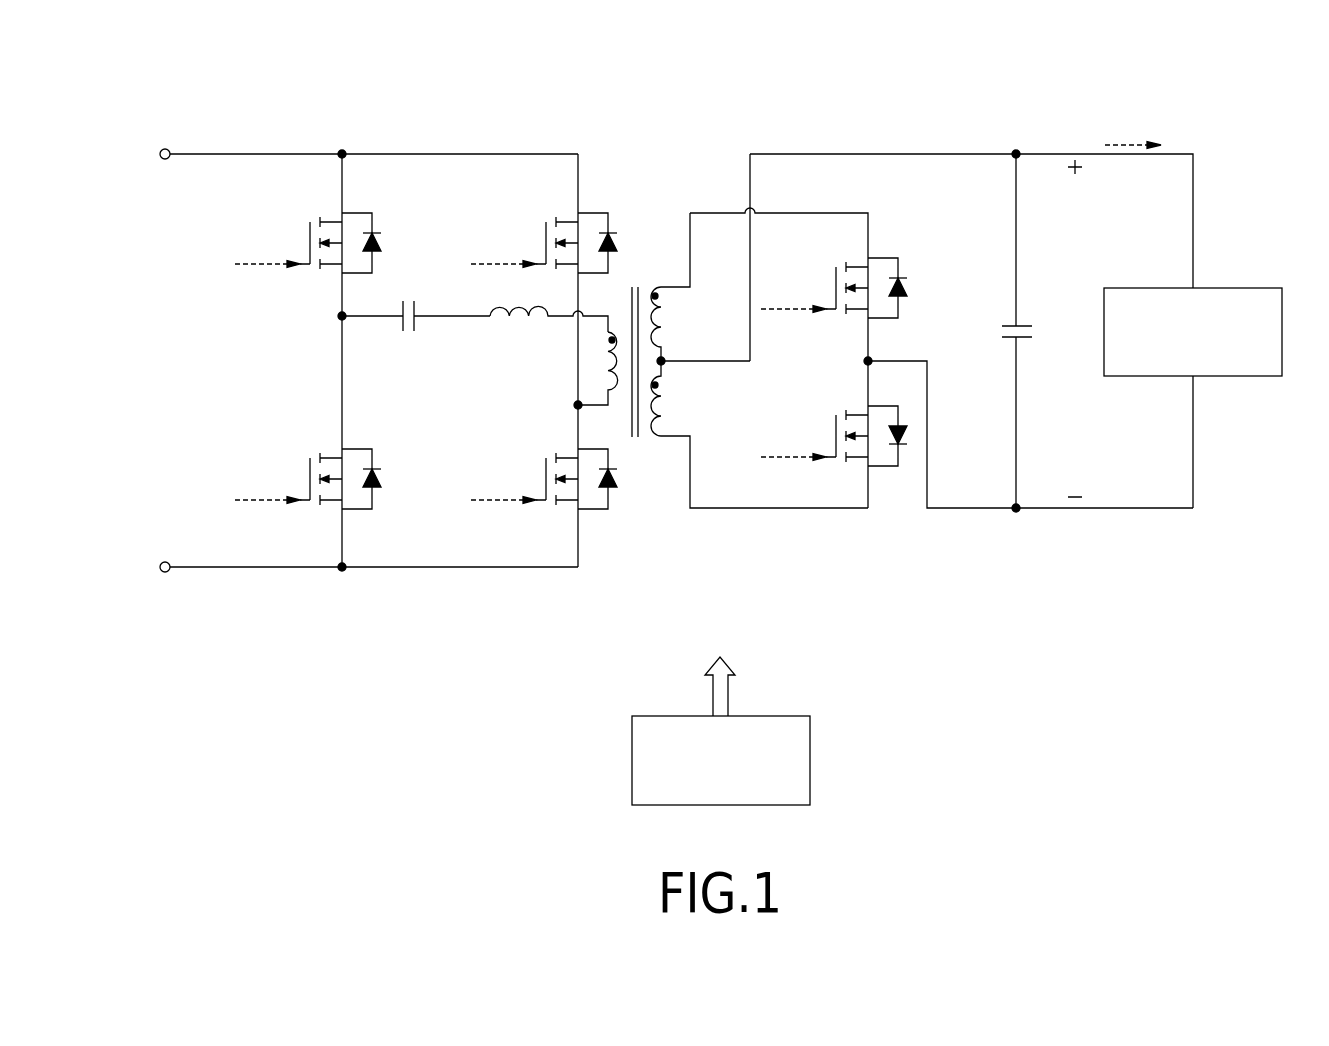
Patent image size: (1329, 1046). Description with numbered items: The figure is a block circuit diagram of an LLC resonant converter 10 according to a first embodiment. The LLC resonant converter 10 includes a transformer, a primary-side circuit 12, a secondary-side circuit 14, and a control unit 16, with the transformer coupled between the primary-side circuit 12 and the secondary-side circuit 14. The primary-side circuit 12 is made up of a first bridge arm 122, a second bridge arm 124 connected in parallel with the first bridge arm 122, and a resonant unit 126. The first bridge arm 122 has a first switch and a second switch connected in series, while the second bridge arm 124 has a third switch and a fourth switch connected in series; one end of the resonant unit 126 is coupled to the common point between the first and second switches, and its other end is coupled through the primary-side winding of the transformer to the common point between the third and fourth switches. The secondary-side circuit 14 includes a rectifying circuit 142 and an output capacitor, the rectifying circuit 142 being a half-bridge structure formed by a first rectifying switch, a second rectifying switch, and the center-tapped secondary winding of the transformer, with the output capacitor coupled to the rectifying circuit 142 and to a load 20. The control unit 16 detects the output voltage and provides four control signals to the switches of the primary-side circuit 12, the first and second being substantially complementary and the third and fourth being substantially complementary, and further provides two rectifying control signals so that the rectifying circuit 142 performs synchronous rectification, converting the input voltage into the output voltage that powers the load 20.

The LLC resonant converter 10 is at (733, 38).
The primary-side circuit 12 is at (426, 128).
The secondary-side circuit 14 is at (886, 128).
The control unit 16 is at (750, 723).
The load 20 is at (1203, 295).
The first bridge arm 122 is at (341, 592).
The second bridge arm 124 is at (577, 605).
The resonant unit 126 is at (497, 340).
The rectifying circuit 142 is at (878, 530).